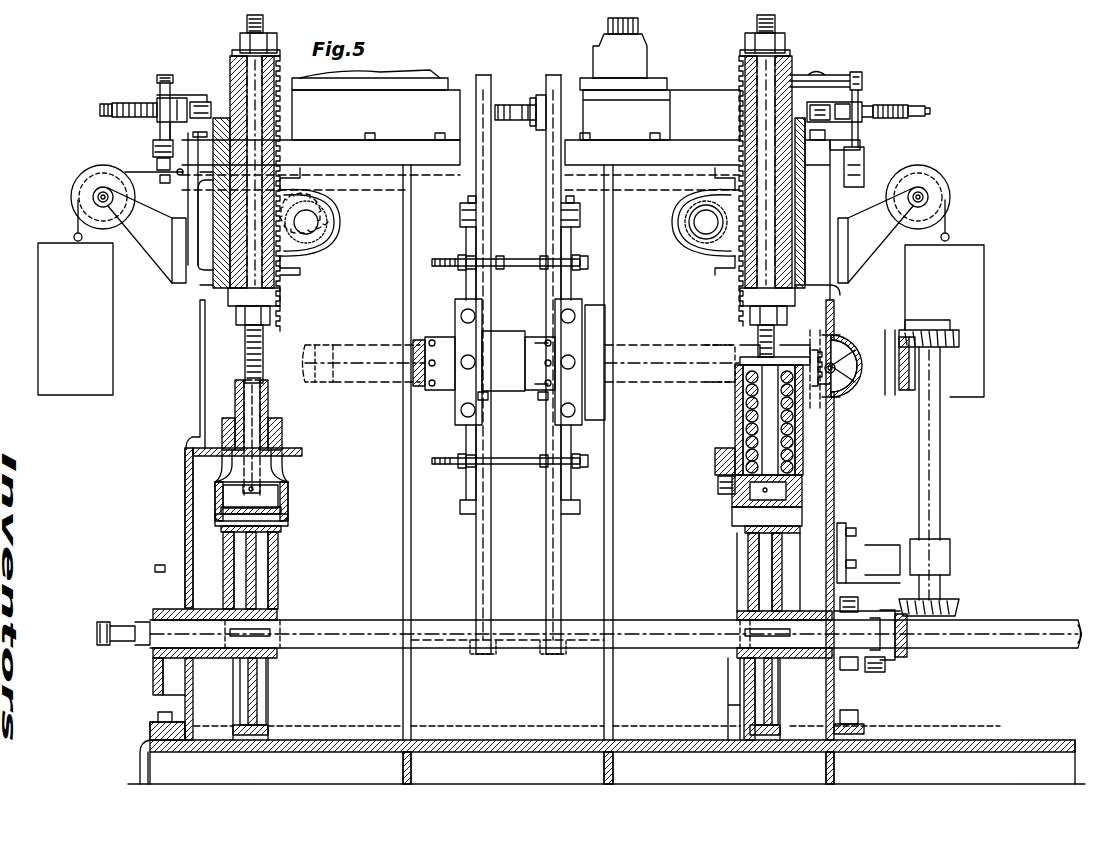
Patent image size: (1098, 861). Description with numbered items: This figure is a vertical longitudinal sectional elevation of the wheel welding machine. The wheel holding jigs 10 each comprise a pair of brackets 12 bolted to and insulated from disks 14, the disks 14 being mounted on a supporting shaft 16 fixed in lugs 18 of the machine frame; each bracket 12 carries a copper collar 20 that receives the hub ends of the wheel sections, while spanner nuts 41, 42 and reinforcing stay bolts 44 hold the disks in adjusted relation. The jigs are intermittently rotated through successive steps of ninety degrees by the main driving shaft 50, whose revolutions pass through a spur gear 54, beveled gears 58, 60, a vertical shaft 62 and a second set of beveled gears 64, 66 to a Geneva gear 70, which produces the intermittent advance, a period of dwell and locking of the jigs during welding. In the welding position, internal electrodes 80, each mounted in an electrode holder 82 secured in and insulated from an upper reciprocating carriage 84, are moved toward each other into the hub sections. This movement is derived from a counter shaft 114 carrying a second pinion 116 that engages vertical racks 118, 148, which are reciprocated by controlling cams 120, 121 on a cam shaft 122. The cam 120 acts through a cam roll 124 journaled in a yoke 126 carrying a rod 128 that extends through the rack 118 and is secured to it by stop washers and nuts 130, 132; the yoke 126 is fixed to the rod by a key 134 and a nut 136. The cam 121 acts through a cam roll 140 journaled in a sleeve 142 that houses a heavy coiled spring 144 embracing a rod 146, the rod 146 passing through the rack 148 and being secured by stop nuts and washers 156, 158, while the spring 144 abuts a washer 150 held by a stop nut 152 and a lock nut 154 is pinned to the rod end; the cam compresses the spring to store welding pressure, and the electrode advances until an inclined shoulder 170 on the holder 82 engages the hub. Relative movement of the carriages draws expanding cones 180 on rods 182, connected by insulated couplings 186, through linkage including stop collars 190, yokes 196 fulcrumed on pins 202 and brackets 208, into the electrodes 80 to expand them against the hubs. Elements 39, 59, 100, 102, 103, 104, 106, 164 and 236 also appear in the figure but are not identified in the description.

The wheel holding jig 10 is at (500, 545).
The bracket 12 is at (540, 226).
The disk 14 is at (470, 290).
The supporting shaft 16 is at (312, 368).
The lug 18 is at (358, 343).
The collar 20 is at (545, 396).
The thread on shaft 39 is at (423, 379).
The spanner nut 41 is at (450, 313).
The spanner nut 42 is at (532, 357).
The reenforcing stay bolt 44 is at (500, 262).
The main driving shaft 50 is at (990, 620).
The spur gear 54 is at (852, 558).
The beveled gear 58 is at (904, 660).
The bolts 59 is at (869, 680).
The beveled gear 60 is at (950, 606).
The vertical shaft 62 is at (948, 513).
The beveled gear 64 is at (950, 340).
The beveled gear 66 is at (905, 395).
The Geneva gear 70 is at (608, 328).
The internal electrode 80 is at (520, 120).
The electrode holder 82 is at (453, 98).
The upper reciprocating carriage 84 is at (323, 87).
The weight 100 is at (36, 303).
The cord / bracket 102 is at (68, 233).
The bracket 103 is at (860, 115).
The pulley 104 is at (67, 196).
The spring 106 is at (125, 100).
The counter shaft 114 is at (330, 214).
The second pinion 116 is at (332, 244).
The vertical rack 118 is at (282, 290).
The controlling cam 120 is at (262, 690).
The controlling cam 121 is at (740, 688).
The cam shaft 122 is at (460, 648).
The cam roll 124 is at (272, 508).
The yoke 126 is at (290, 470).
The rod 128 is at (245, 354).
The stop washer and nut 130 is at (274, 318).
The stop washer and nut 132 is at (232, 47).
The key 134 is at (238, 398).
The nut 136 is at (228, 490).
The cam roll 140 is at (745, 540).
The sleeve 142 is at (715, 493).
The coiled spring 144 is at (740, 418).
The rod 146 is at (735, 393).
The vertical rack 148 is at (733, 111).
The washer 150 is at (740, 364).
The stop nut 152 is at (740, 343).
The lock nut 154 is at (800, 488).
The stop nut and washer 156 is at (740, 321).
The stop nut and washer 158 is at (780, 53).
The adjusting rod 164 is at (90, 113).
The inclined shoulder 170 is at (535, 100).
The expanding cone 180 is at (840, 343).
The rod 182 is at (845, 400).
The insulated coupling 186 is at (200, 98).
The stop collar 190 is at (158, 95).
The yoke 196 is at (118, 128).
The pin 202 is at (158, 134).
The bracket 208 is at (166, 180).
The flange 236 is at (180, 568).